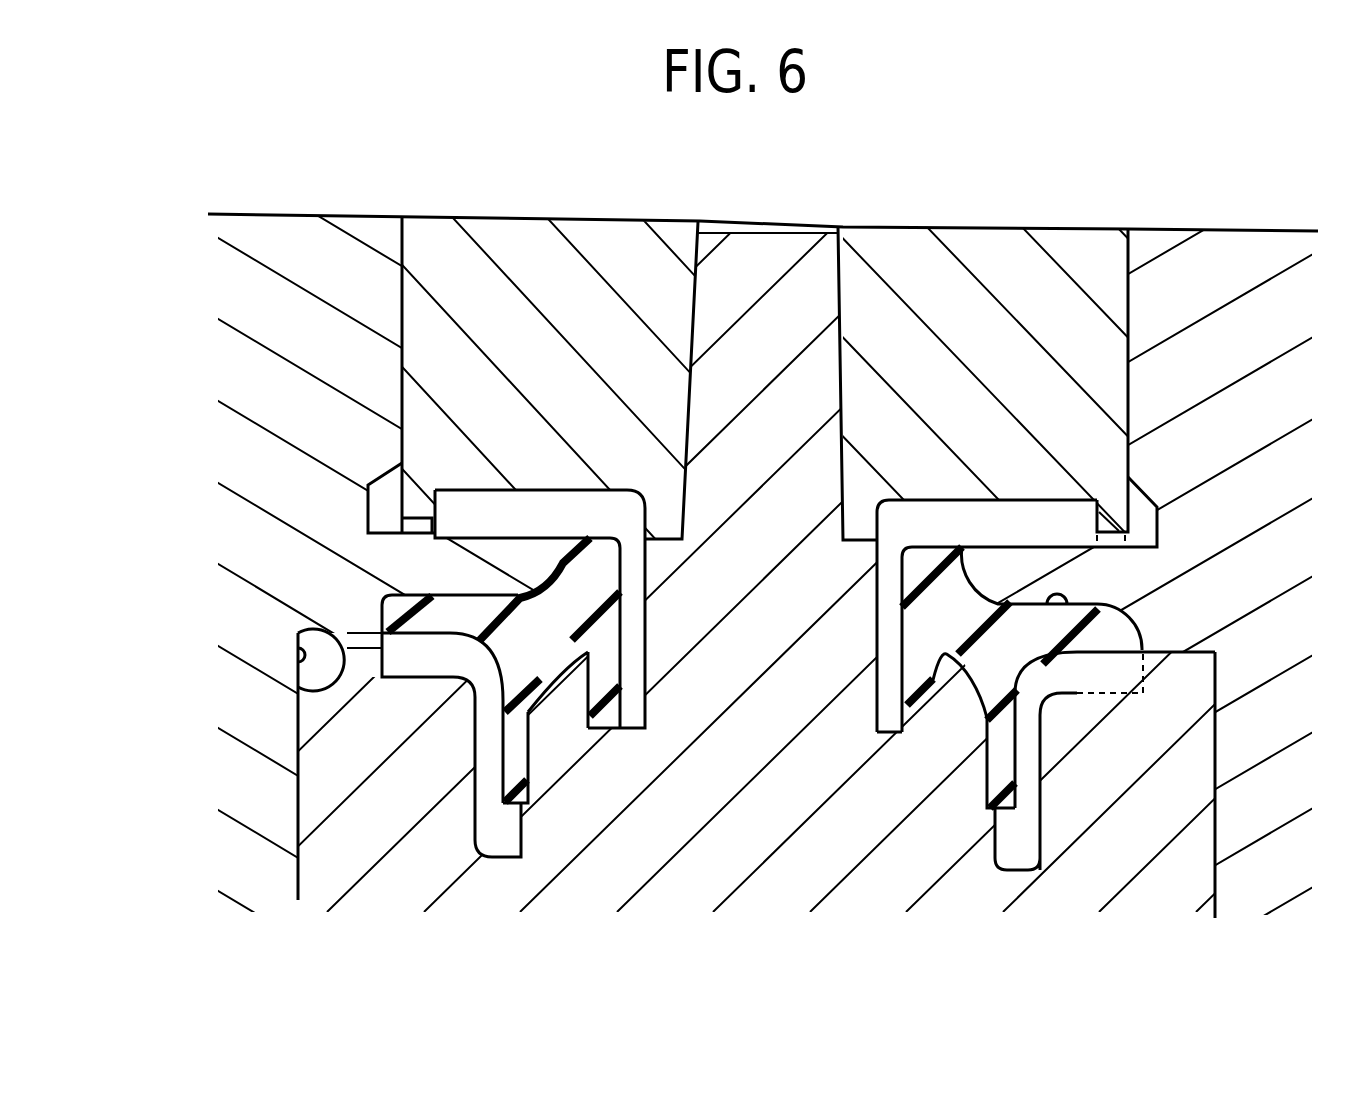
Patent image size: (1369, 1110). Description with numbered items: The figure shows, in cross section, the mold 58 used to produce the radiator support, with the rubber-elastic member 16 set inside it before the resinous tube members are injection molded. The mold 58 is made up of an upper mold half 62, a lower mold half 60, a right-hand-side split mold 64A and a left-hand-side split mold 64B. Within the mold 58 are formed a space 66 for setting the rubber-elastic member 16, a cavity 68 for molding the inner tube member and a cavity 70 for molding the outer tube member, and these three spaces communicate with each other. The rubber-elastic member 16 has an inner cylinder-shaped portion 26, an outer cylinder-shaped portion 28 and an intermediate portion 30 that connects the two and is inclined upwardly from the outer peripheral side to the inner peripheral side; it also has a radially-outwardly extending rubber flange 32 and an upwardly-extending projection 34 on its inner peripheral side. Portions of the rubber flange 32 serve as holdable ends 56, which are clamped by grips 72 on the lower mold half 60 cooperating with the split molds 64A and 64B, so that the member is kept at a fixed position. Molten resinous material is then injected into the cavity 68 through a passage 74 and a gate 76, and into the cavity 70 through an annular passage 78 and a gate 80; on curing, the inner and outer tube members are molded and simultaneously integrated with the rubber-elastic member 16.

The rubber-elastic member 16 is at (1028, 596).
The inner cylinder-shaped portion 26 is at (612, 727).
The outer cylinder-shaped portion 28 is at (514, 790).
The intermediate portion 30 is at (548, 606).
The rubber flange 32 is at (477, 598).
The upwardly-extending projection 34 is at (568, 558).
The holdable ends 56 is at (1120, 624).
The mold 58 is at (1288, 176).
The lower mold half 60 is at (746, 872).
The upper mold half 62 is at (554, 385).
The right-hand-side split mold 64A is at (1302, 511).
The left-hand-side split mold 64B is at (285, 483).
The space 66 is at (1070, 605).
The cavity 68 is at (912, 502).
The cavity 70 is at (1034, 845).
The grips 72 is at (1114, 688).
The passage 74 is at (372, 500).
The gate 76 is at (403, 533).
The annular passage 78 is at (300, 672).
The gate 80 is at (352, 635).